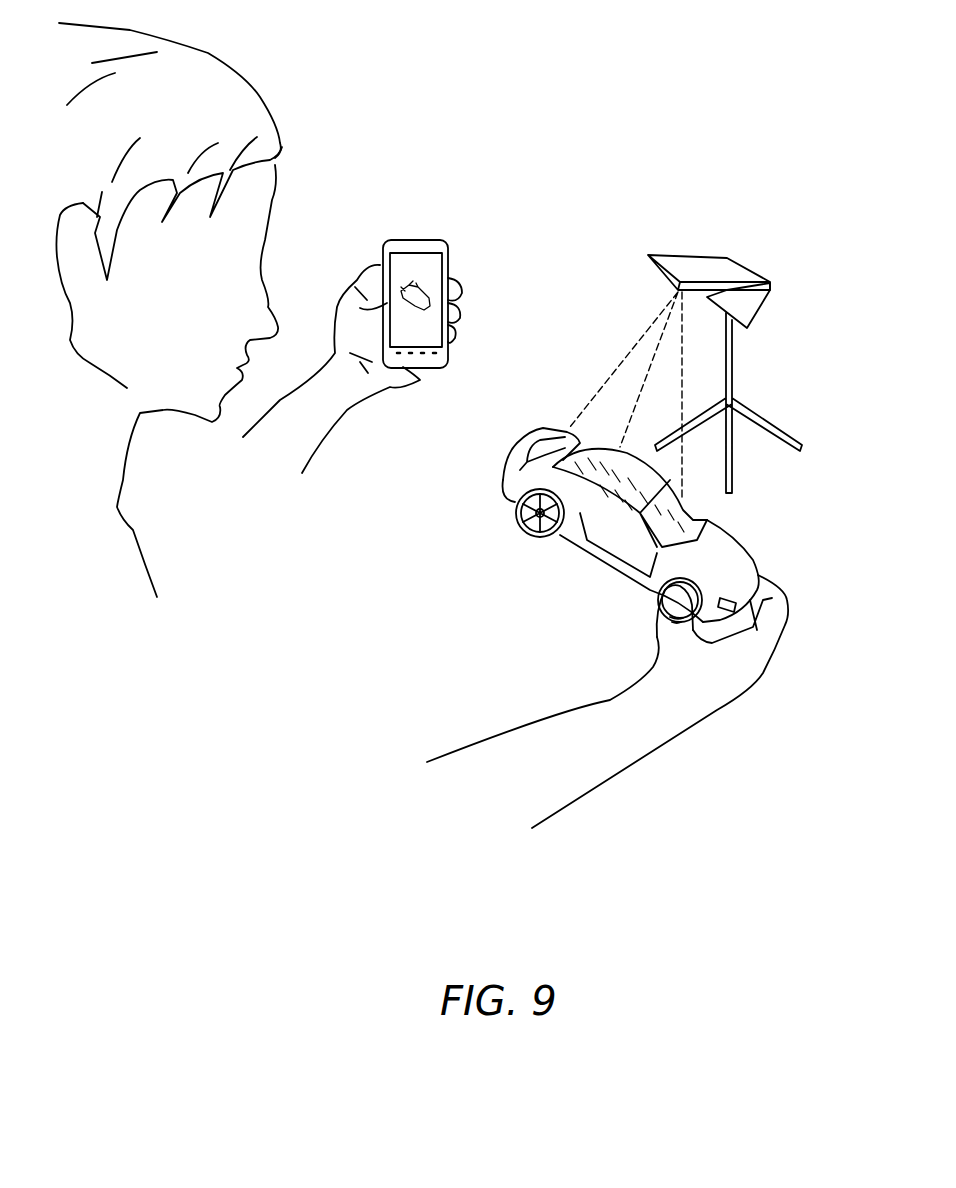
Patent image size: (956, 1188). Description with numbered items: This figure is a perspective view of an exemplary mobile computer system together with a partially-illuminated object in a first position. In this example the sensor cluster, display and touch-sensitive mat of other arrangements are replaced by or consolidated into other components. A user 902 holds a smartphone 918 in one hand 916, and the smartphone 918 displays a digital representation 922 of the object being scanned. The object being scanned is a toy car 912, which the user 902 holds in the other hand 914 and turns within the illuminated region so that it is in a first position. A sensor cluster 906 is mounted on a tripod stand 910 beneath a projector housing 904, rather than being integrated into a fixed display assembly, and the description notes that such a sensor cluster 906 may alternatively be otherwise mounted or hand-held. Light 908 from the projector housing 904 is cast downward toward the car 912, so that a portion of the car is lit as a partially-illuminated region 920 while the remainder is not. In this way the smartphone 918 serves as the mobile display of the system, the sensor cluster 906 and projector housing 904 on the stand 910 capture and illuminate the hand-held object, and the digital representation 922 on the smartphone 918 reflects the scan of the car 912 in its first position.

The user 902 is at (208, 77).
The projector 904 is at (703, 262).
The sensor cluster 906 is at (727, 290).
The projected light 908 is at (665, 308).
The stand 910 is at (760, 413).
The object (toy car) 912 is at (603, 570).
The hand holding object 914 is at (727, 692).
The hand holding mobile device 916 is at (320, 433).
The smartphone 918 is at (423, 240).
The projected image on object 920 is at (603, 453).
The digital representation 922 is at (427, 293).